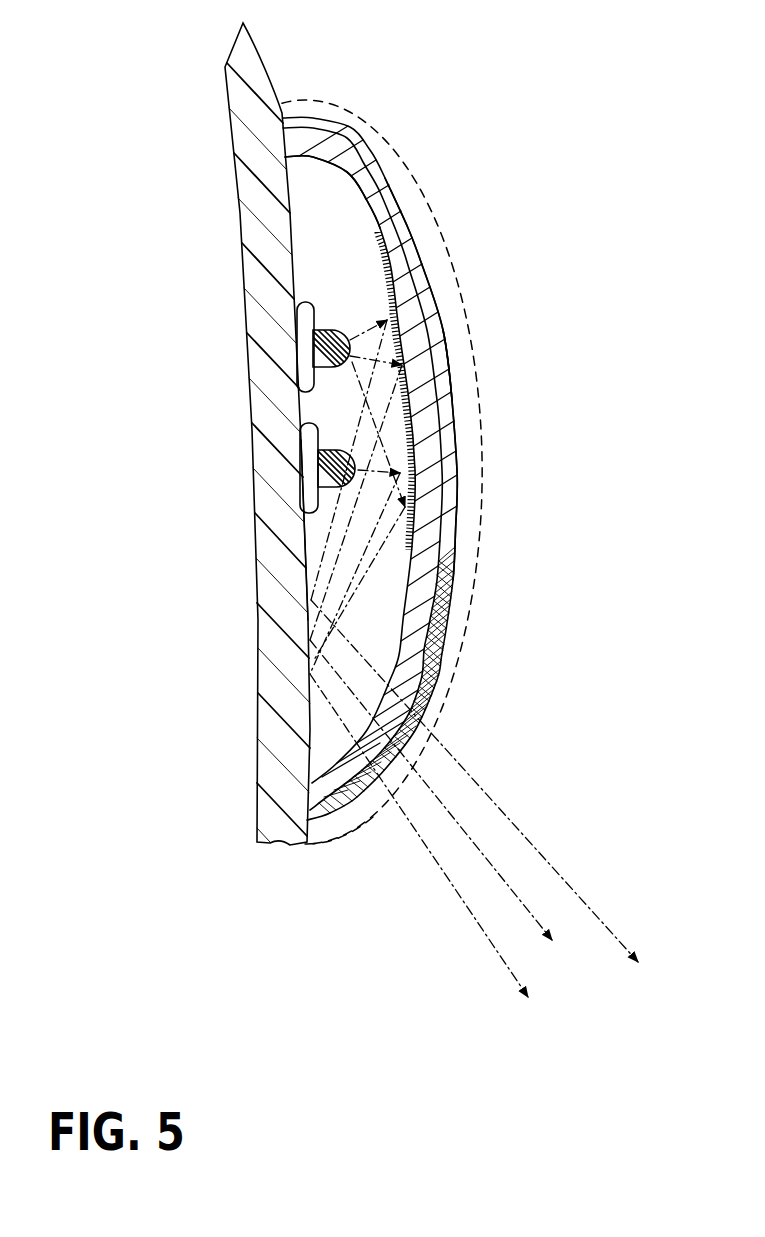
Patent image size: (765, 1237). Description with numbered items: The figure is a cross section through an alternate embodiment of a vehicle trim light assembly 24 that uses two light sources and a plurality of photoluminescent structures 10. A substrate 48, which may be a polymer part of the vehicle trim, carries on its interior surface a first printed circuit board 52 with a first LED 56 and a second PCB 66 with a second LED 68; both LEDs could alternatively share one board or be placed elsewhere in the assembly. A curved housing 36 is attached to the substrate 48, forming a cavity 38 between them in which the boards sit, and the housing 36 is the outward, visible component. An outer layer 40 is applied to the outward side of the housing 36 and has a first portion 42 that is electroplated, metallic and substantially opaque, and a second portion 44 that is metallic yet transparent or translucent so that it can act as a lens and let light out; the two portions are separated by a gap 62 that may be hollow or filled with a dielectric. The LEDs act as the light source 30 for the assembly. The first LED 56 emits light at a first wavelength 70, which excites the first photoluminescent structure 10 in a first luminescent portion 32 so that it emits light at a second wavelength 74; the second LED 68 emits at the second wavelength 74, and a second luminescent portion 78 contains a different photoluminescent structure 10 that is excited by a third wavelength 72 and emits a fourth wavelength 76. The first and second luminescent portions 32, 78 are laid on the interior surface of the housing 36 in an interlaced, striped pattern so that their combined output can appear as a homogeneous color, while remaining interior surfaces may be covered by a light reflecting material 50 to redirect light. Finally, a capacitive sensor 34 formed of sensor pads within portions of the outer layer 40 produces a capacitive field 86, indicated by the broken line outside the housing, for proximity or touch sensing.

The photoluminescent structure 10 is at (440, 290).
The trim light assembly 24 is at (313, 87).
The light source 30 is at (337, 312).
The first luminescent portion 32 is at (442, 327).
The capacitive sensor 34 is at (460, 520).
The housing 36 is at (308, 147).
The cavity 38 is at (308, 197).
The outer layer 40 is at (465, 468).
The first portion 42 is at (405, 315).
The second portion 44 is at (337, 830).
The substrate 48 is at (258, 215).
The light reflecting material 50 is at (303, 563).
The first printed circuit board 52 is at (305, 323).
The first LED 56 is at (325, 338).
The gap 62 is at (447, 557).
The second PCB 66 is at (305, 453).
The second LED 68 is at (300, 486).
The first wavelength 70 is at (363, 403).
The third wavelength 72 is at (395, 482).
The second wavelength 74 is at (365, 655).
The fourth wavelength 76 is at (453, 820).
The second luminescent portion 78 is at (445, 385).
The capacitive field 86 is at (377, 133).